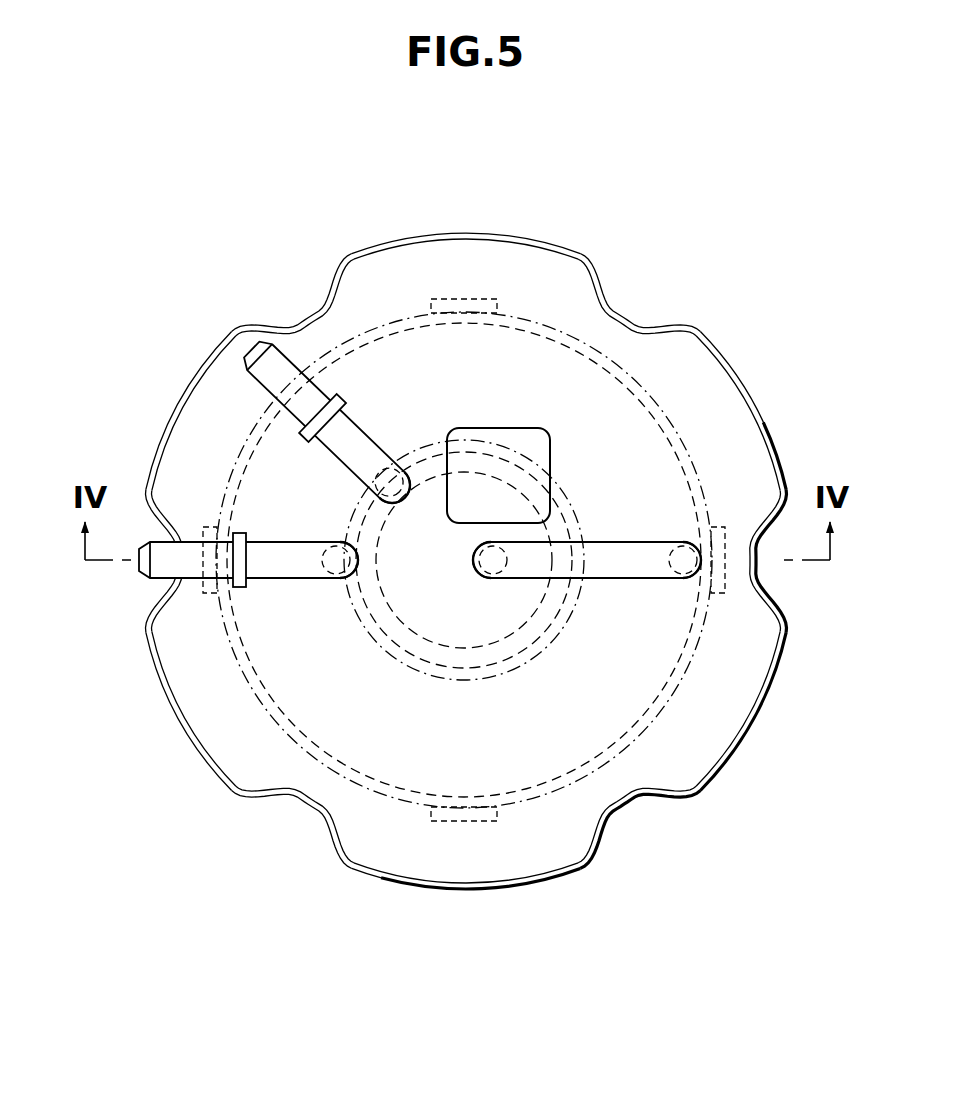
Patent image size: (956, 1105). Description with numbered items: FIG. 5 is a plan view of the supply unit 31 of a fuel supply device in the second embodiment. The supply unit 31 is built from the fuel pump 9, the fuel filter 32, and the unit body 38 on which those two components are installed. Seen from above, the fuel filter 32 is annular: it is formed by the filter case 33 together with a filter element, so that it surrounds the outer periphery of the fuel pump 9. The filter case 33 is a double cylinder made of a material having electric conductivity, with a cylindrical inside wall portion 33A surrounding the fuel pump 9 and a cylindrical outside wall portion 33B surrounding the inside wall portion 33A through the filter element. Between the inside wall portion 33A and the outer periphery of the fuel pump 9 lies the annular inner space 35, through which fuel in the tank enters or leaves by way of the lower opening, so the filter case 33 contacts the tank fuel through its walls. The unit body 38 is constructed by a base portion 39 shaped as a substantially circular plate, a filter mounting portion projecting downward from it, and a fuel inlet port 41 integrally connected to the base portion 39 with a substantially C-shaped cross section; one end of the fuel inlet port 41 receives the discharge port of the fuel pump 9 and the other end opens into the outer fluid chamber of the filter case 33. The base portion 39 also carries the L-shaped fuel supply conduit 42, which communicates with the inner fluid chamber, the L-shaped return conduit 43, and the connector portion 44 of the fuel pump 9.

The fuel pump 9 is at (403, 588).
The supply unit 31 is at (619, 252).
The fuel filter 32 is at (666, 725).
The filter case 33 is at (587, 773).
The inside wall portion 33A is at (390, 654).
The outside wall portion 33B is at (398, 798).
The inner space 35 is at (490, 653).
The unit body 38 is at (710, 327).
The base portion 39 is at (387, 277).
The fuel inlet port 41 is at (647, 568).
The fuel supply conduit 42 is at (189, 565).
The return conduit 43 is at (279, 364).
The connector portion 44 is at (521, 442).